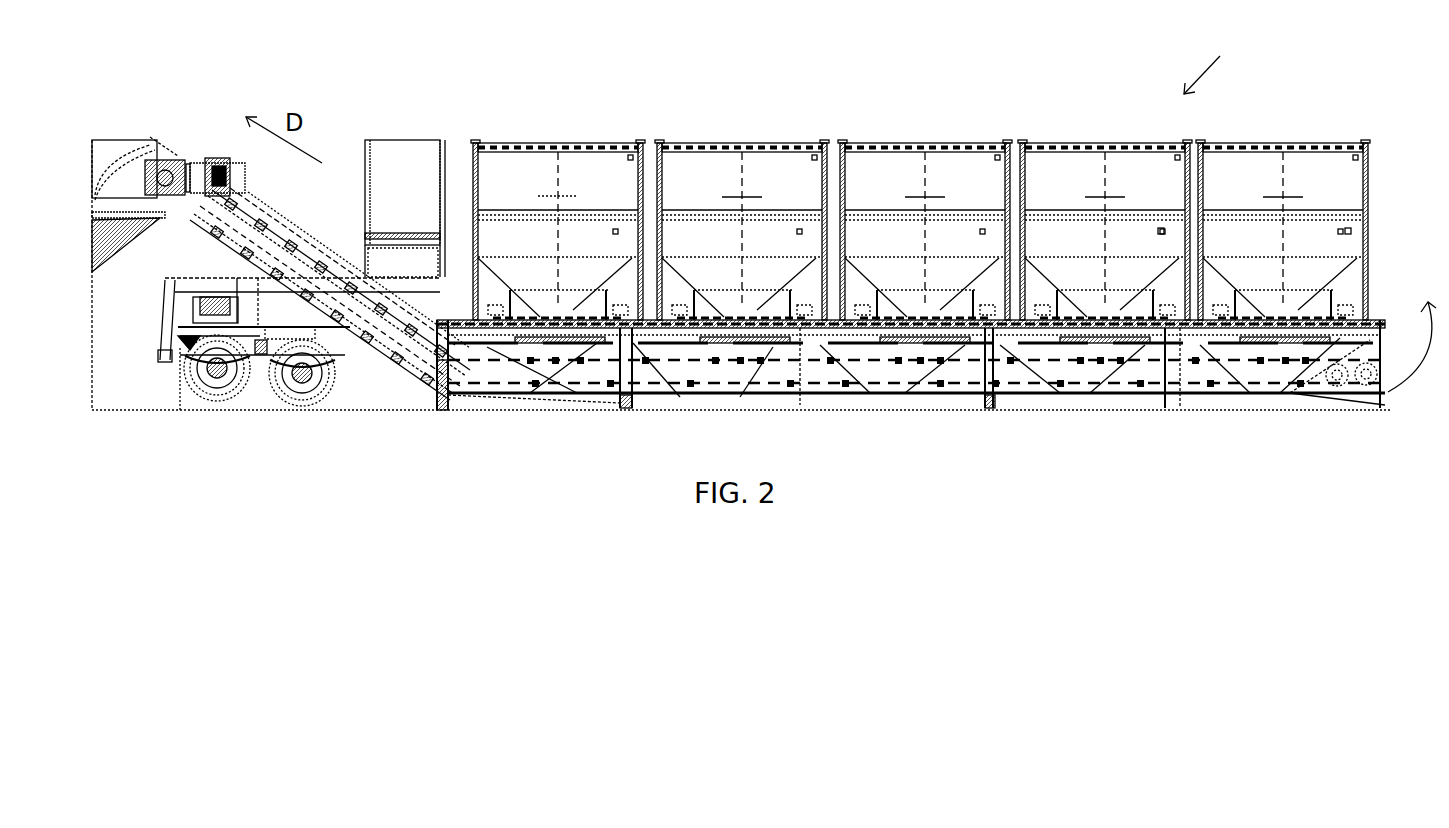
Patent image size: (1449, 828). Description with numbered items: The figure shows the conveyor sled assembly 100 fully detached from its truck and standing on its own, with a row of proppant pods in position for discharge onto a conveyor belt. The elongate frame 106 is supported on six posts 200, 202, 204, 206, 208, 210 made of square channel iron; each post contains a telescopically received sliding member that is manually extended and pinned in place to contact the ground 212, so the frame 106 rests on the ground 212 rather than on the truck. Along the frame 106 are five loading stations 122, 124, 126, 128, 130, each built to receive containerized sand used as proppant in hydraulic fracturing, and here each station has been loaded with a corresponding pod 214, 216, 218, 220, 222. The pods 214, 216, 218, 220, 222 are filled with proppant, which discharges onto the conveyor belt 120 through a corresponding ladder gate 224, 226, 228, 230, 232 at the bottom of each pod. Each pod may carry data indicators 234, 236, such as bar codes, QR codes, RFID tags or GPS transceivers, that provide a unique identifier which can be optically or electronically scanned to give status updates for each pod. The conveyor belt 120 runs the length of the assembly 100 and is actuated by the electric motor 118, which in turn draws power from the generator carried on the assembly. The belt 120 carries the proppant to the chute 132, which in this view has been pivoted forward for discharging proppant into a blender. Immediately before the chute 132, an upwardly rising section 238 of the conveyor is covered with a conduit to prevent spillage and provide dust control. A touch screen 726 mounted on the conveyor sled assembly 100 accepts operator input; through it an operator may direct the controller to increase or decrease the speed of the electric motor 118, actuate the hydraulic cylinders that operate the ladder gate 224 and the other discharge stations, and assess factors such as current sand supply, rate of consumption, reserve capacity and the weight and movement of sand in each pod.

The conveyor sled assembly 100 is at (1223, 64).
The elongate frame 106 is at (1385, 330).
The electric motor 118 is at (212, 150).
The conveyor belt 120 is at (1395, 330).
The loading station 122 is at (565, 143).
The loading station 124 is at (762, 143).
The loading station 126 is at (948, 143).
The loading station 128 is at (1122, 143).
The loading station 130 is at (1310, 143).
The chute 132 is at (135, 253).
The post 200 is at (450, 410).
The post 202 is at (628, 405).
The post 204 is at (822, 400).
The post 206 is at (988, 405).
The post 208 is at (1168, 395).
The post 210 is at (1372, 400).
The ground 212 is at (390, 408).
The pod 214 is at (558, 230).
The pod 216 is at (742, 230).
The pod 218 is at (925, 230).
The pod 220 is at (1105, 230).
The pod 222 is at (1283, 230).
The ladder gate 224 is at (573, 307).
The ladder gate 226 is at (757, 307).
The ladder gate 228 is at (940, 307).
The ladder gate 230 is at (1120, 307).
The ladder gate 232 is at (1296, 307).
The data indicator 234 is at (1158, 232).
The data indicator 236 is at (1345, 232).
The upwardly rising section 238 is at (283, 226).
The touch screen 726 is at (340, 148).